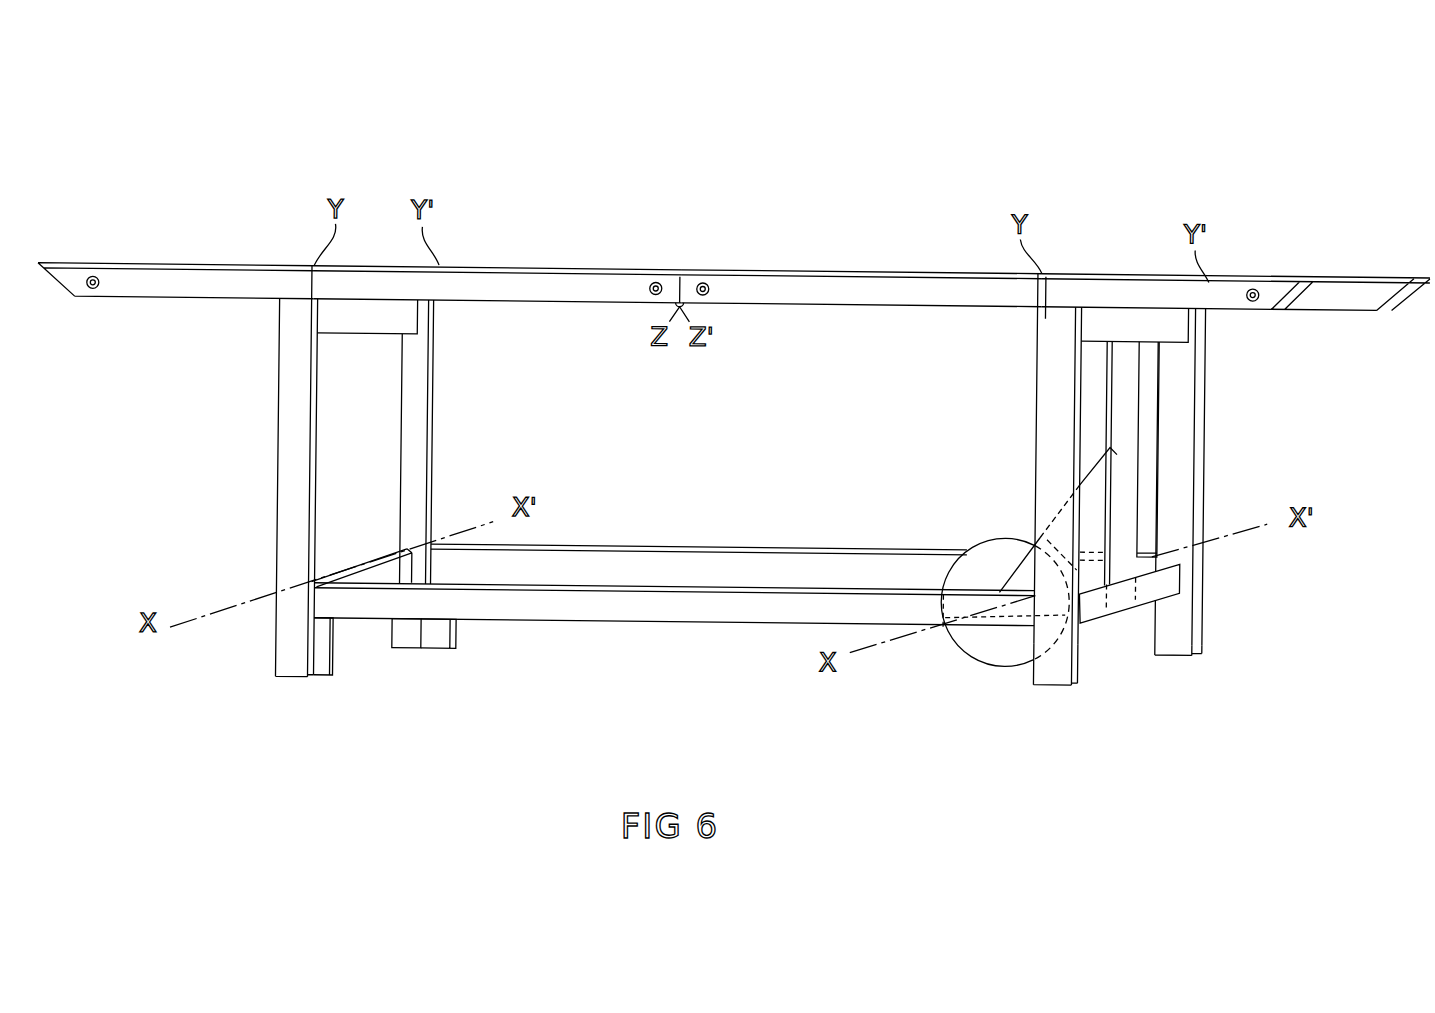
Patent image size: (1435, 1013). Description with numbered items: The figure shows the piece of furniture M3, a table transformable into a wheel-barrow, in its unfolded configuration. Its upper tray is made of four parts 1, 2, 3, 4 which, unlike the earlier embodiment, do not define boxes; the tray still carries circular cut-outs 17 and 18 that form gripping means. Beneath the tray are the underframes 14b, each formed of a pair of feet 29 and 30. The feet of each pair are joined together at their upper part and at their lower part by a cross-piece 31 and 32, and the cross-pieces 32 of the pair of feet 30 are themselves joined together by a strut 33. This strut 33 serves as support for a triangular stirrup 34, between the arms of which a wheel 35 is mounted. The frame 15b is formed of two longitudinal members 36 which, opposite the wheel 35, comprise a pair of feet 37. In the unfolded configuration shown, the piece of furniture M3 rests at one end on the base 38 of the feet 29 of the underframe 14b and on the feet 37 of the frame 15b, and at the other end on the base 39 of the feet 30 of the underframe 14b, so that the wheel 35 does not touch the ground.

The tray part 1 is at (190, 296).
The tray part 2 is at (538, 284).
The tray part 3 is at (872, 290).
The tray part 4 is at (1118, 292).
The circular cut-out 17 is at (92, 282).
The circular cut-out 18 is at (702, 280).
The feet 29 is at (414, 402).
The feet 30 is at (1050, 374).
The cross-piece 31 is at (362, 320).
The cross-piece 32 is at (1163, 327).
The strut 33 is at (1128, 420).
The triangular stirrup 34 is at (1093, 486).
The wheel 35 is at (1032, 536).
The longitudinal member 36 is at (606, 568).
The feet 37 is at (320, 647).
The base 38 is at (292, 679).
The base 39 is at (1055, 684).
The underframe 14b is at (262, 433).
The frame 15b is at (723, 532).
The piece of furniture M3 is at (916, 195).